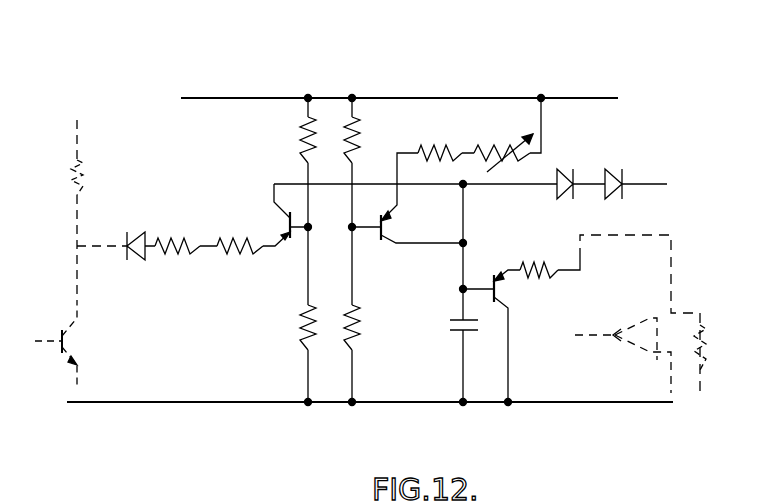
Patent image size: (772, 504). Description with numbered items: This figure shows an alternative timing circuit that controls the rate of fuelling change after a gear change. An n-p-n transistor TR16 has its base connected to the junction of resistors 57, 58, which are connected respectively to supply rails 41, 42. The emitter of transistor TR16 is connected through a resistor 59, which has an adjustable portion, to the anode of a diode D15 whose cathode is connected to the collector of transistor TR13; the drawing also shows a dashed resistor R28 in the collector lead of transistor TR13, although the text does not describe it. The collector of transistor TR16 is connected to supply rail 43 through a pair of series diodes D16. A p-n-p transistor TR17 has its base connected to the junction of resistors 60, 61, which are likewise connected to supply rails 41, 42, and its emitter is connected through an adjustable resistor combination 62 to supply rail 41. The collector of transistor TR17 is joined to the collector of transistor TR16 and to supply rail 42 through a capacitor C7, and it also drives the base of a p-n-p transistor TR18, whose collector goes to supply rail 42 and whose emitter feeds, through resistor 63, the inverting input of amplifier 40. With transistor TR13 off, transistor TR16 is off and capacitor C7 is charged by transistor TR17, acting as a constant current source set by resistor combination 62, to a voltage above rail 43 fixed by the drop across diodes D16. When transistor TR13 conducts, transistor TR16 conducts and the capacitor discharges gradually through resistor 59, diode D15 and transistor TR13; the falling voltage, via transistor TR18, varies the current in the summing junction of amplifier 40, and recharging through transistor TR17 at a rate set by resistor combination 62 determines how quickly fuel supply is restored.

The supply rail 41 is at (570, 97).
The supply rail 42 is at (625, 403).
The supply rail 43 is at (645, 180).
The amplifier 40 is at (641, 352).
The resistor 57 is at (297, 143).
The resistor 58 is at (300, 340).
The resistor 59 is at (172, 252).
The resistor 60 is at (360, 147).
The resistor 61 is at (360, 332).
The adjustable resistor combination 62 is at (474, 147).
The resistor 63 is at (549, 265).
The capacitor C7 is at (458, 328).
The diode D15 is at (127, 250).
The diodes D16 is at (590, 174).
The resistor R28 is at (88, 190).
The transistor TR13 is at (72, 345).
The n-p-n transistor TR16 is at (284, 228).
The p-n-p transistor TR17 is at (388, 227).
The p-n-p transistor TR18 is at (501, 289).